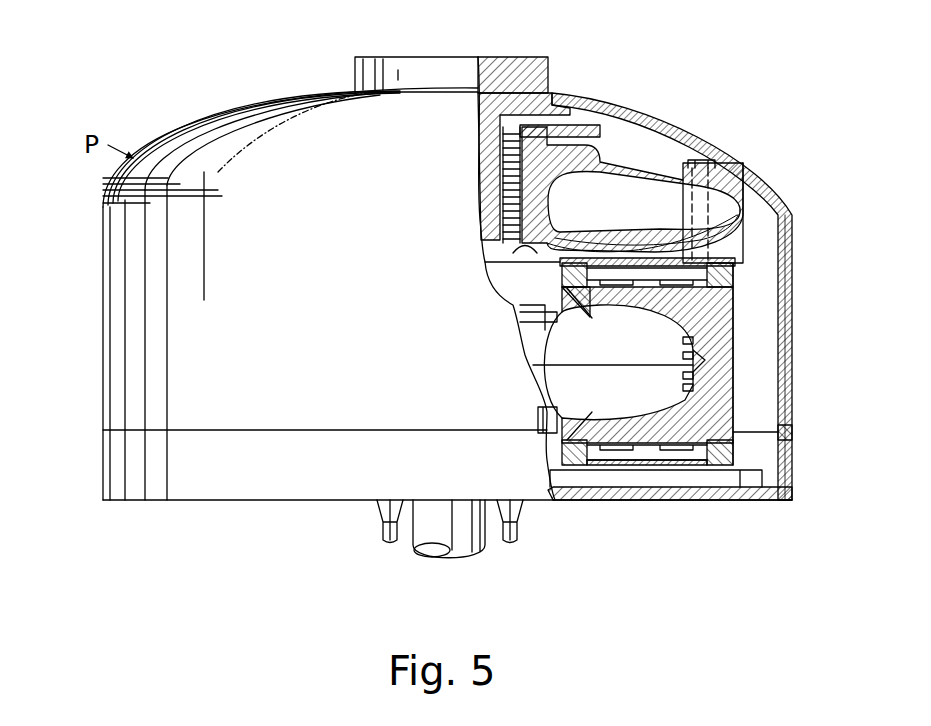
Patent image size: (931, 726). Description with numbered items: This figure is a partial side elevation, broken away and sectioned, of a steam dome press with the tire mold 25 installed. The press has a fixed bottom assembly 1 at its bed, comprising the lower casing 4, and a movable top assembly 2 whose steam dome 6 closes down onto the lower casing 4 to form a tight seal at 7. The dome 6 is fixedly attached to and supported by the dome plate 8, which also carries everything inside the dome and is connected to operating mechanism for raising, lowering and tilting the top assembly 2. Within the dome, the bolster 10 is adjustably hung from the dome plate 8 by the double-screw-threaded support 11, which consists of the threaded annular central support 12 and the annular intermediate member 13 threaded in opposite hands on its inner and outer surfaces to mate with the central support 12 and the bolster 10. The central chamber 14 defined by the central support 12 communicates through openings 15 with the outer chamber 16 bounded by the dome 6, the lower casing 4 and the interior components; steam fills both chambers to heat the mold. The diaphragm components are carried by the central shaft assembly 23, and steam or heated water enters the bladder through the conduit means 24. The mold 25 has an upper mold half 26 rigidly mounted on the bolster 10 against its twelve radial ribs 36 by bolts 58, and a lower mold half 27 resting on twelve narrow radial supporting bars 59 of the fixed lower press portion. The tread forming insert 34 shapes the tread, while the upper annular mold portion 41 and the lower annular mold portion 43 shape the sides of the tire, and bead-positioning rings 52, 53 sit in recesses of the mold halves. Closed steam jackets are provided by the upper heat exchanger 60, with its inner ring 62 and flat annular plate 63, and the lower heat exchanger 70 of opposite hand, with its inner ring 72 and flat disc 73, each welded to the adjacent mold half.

The fixed press bottom assembly 1 is at (633, 513).
The movable top assembly 2 is at (779, 171).
The lower casing 4 is at (103, 475).
The steam dome 6 is at (223, 117).
The seal 7 is at (333, 430).
The dome plate 8 is at (355, 65).
The bolster 10 is at (652, 246).
The double-screw-threaded support 11 is at (603, 146).
The threaded annular central support 12 is at (487, 173).
The annular intermediate member 13 is at (503, 203).
The central chamber 14 is at (511, 280).
The openings 15 is at (735, 243).
The outer chamber 16 is at (770, 310).
The central shaft assembly 23 is at (487, 547).
The conduit means 24 is at (377, 532).
The tire mold 25 is at (761, 368).
The upper mold half 26 is at (768, 347).
The lower mold half 27 is at (768, 411).
The tread forming insert 34 is at (693, 320).
The radial ribs 36 is at (790, 262).
The upper annular mold portion 41 is at (597, 308).
The lower annular mold portion 43 is at (617, 423).
The bead-positioning ring 52 is at (558, 307).
The bead-positioning ring 53 is at (540, 390).
The bolts 58 is at (695, 160).
The radial supporting bars 59 is at (737, 480).
The upper heat exchanger 60 is at (560, 268).
The inner ring 62 is at (726, 272).
The flat annular plate 63 is at (665, 255).
The lower heat exchanger 70 is at (523, 453).
The inner ring 72 is at (727, 457).
The flat disc 73 is at (677, 470).